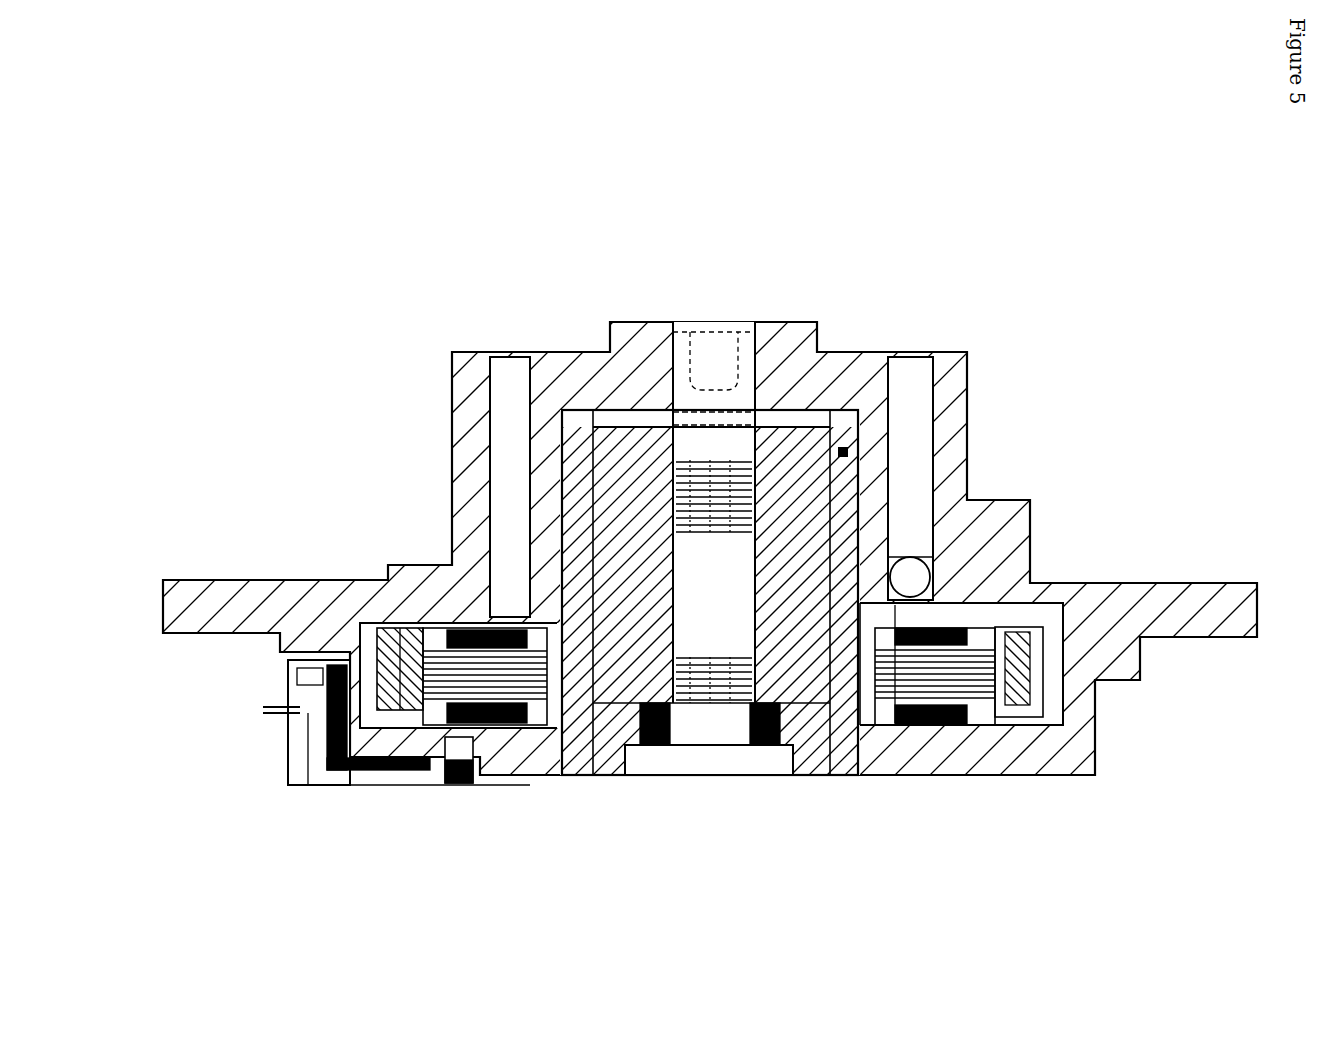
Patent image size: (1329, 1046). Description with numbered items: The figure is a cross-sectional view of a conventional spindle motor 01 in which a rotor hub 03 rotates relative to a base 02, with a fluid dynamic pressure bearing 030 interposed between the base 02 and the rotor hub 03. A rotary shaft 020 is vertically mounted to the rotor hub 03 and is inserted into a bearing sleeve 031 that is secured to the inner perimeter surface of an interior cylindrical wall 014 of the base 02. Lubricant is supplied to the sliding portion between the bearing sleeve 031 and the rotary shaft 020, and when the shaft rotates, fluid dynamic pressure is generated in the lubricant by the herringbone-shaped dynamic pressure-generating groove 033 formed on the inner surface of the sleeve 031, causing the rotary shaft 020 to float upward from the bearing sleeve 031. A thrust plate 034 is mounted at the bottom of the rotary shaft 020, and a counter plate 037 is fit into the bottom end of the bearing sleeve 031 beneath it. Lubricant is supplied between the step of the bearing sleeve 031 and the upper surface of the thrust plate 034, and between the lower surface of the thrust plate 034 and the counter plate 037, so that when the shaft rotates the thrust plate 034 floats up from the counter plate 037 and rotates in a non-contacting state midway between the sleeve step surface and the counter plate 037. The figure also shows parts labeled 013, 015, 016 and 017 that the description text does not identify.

The spindle motor 01 is at (920, 252).
The base 02 is at (383, 808).
The rotor hub 03 is at (432, 396).
The connector 013 is at (290, 666).
The interior cylindrical wall 014 is at (563, 778).
The stator coil 015 is at (926, 740).
The coil bracket 016 is at (1013, 695).
The terminal pin 017 is at (450, 786).
The rotary shaft 020 is at (713, 352).
The fluid dynamic pressure bearing 030 is at (850, 427).
The bearing sleeve 031 is at (820, 483).
The herringbone-shaped dynamic pressure-generating groove 033 is at (712, 540).
The thrust plate 034 is at (764, 747).
The counter plate 037 is at (697, 757).